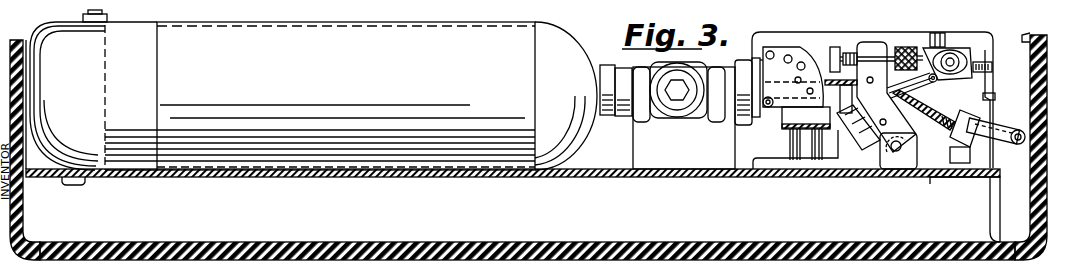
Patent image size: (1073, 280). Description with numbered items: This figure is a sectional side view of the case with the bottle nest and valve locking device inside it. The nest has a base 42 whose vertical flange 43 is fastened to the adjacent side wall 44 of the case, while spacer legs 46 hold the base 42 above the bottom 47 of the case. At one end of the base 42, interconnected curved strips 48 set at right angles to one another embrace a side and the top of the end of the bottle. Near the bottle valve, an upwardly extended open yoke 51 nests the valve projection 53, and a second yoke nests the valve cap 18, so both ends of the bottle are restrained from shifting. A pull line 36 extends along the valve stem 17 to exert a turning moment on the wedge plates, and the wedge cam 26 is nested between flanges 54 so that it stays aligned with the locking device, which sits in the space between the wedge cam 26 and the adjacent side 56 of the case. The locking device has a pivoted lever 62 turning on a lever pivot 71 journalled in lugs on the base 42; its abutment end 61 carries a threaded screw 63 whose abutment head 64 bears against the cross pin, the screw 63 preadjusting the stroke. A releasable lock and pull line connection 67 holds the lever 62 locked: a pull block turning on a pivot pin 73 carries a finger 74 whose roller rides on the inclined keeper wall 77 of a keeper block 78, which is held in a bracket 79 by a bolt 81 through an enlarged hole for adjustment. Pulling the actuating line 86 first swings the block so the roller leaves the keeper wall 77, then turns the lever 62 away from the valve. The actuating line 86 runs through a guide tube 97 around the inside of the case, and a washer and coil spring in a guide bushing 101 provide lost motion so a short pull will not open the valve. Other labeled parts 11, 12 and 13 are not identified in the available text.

The cylinder neck 11 is at (611, 80).
The gas cylinder 12 is at (369, 70).
The valve body boss 13 is at (688, 62).
The valve stem 17 is at (787, 97).
The valve cap 18 is at (738, 120).
The wedge cam 26 is at (791, 45).
The pull line 36 is at (846, 86).
The base 42 is at (600, 178).
The vertical flange 43 is at (356, 1).
The side wall 44 is at (576, 0).
The spacer legs 46 is at (994, 211).
The bottom 47 is at (402, 243).
The curved strips 48 is at (67, 23).
The open yoke 51 is at (687, 158).
The valve projection 53 is at (684, 114).
The flanges 54 is at (795, 116).
The side 56 is at (1030, 36).
The abutment end 61 is at (880, 44).
The pivoted lever 62 is at (880, 115).
The screw 63 is at (852, 52).
The abutment head 64 is at (832, 50).
The releasable lock and pull line connection 67 is at (906, 113).
The lever pivot 71 is at (897, 152).
The pivot pin 73 is at (882, 118).
The finger 74 is at (922, 94).
The inclined keeper wall 77 is at (917, 83).
The keeper block 78 is at (959, 79).
The bracket 79 is at (972, 33).
The bolt 81 is at (950, 57).
The actuating line 86 is at (940, 114).
The guide tube 97 is at (1002, 128).
The guide bushing 101 is at (985, 140).